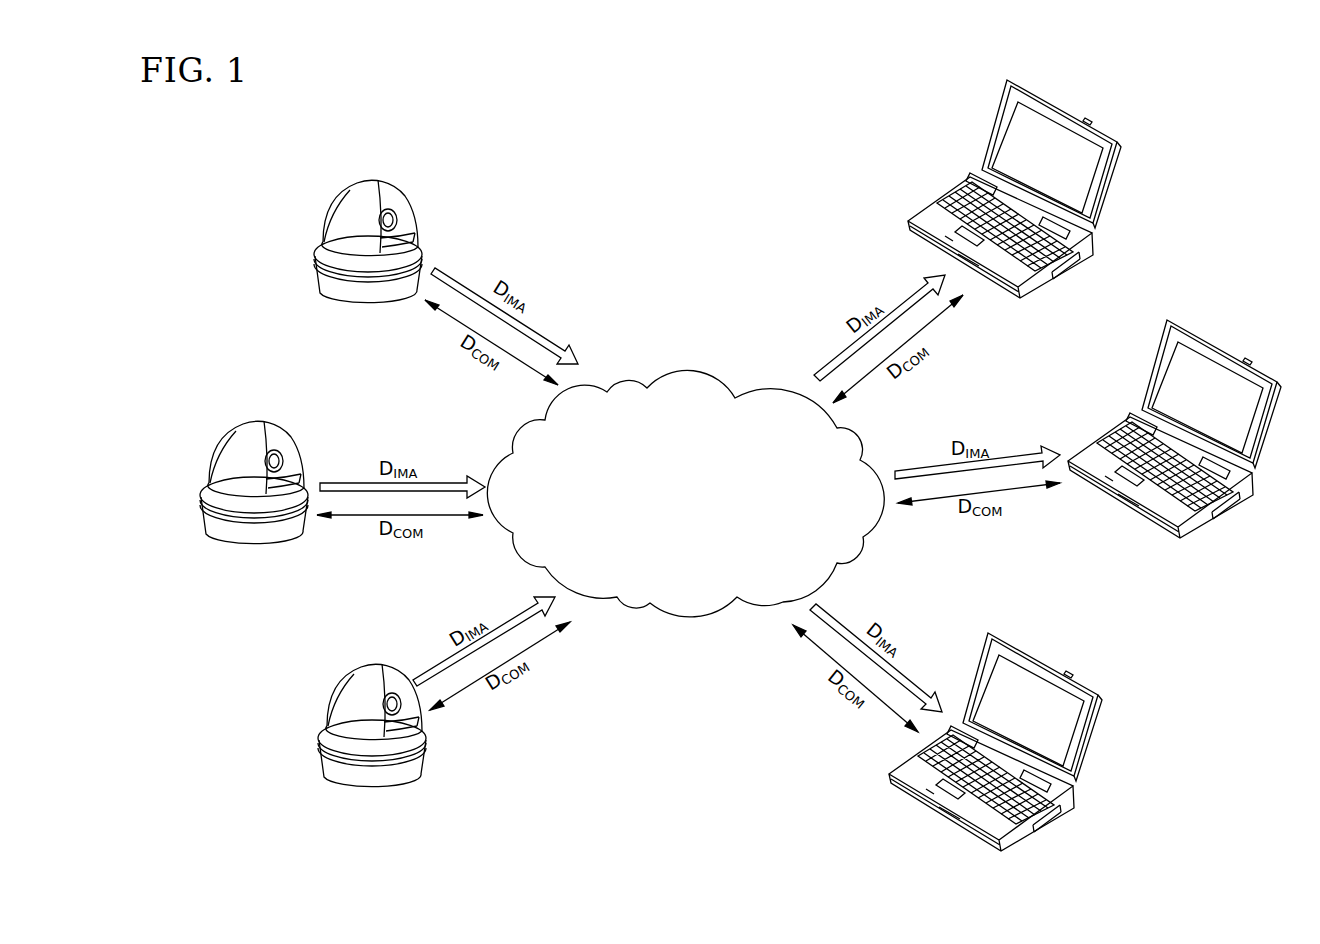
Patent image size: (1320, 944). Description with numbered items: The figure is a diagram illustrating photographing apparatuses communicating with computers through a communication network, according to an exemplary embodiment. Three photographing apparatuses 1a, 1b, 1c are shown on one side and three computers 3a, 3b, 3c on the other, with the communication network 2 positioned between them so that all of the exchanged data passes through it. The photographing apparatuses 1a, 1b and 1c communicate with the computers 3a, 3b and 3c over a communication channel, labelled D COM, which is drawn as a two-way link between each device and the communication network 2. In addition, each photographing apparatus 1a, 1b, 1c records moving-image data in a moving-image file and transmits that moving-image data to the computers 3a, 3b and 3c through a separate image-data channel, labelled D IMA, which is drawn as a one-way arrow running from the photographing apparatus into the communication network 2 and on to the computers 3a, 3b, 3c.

The photographing apparatus 1a is at (342, 295).
The photographing apparatus 1b is at (225, 542).
The photographing apparatus 1c is at (345, 783).
The communication network 2 is at (689, 372).
The computer 3a is at (942, 197).
The computer 3b is at (1103, 437).
The computer 3c is at (910, 770).